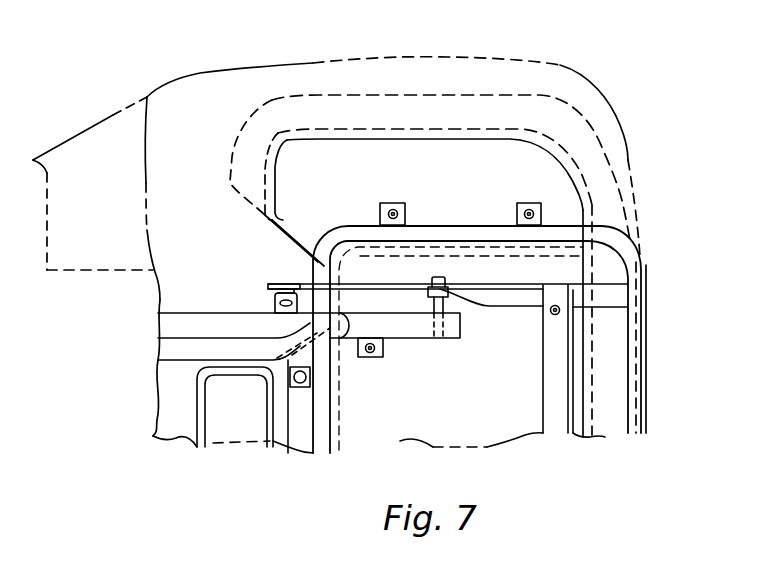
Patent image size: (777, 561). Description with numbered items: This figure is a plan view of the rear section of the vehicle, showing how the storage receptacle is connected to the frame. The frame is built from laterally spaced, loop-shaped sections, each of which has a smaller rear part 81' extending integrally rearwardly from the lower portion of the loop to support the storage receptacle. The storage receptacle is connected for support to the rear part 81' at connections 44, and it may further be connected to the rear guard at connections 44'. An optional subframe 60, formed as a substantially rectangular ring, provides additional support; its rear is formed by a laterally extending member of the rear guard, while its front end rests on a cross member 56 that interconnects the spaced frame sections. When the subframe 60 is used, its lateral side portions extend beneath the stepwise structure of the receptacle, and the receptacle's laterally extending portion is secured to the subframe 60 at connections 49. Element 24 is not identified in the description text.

The cab 24 is at (190, 110).
The subframe 60 is at (614, 238).
The rear part of frame section 81' is at (392, 295).
The connections 49 is at (390, 203).
The connections 44 is at (376, 380).
The connections 44' is at (520, 351).
The cross member 56 is at (293, 423).